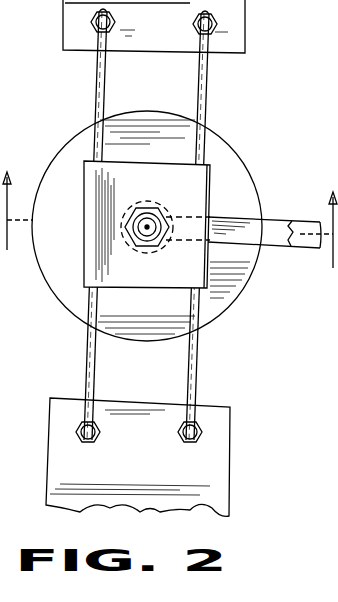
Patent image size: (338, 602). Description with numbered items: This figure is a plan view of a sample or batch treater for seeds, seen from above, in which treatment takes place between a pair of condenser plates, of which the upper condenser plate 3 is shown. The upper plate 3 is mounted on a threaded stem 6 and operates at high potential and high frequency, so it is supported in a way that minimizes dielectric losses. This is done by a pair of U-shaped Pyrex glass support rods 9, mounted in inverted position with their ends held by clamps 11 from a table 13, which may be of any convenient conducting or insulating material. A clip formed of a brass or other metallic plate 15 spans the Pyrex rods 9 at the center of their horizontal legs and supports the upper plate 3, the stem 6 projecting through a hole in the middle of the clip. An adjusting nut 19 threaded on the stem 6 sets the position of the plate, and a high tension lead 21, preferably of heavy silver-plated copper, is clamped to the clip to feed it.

The upper condenser plate 3 is at (235, 162).
The threaded stem 6 is at (149, 225).
The U-shaped Pyrex glass support rods 9 is at (98, 71).
The clamps 11 is at (87, 444).
The table 13 is at (224, 452).
The metallic clip plate 15 is at (89, 236).
The adjusting nut 19 is at (140, 243).
The high tension lead 21 is at (271, 218).